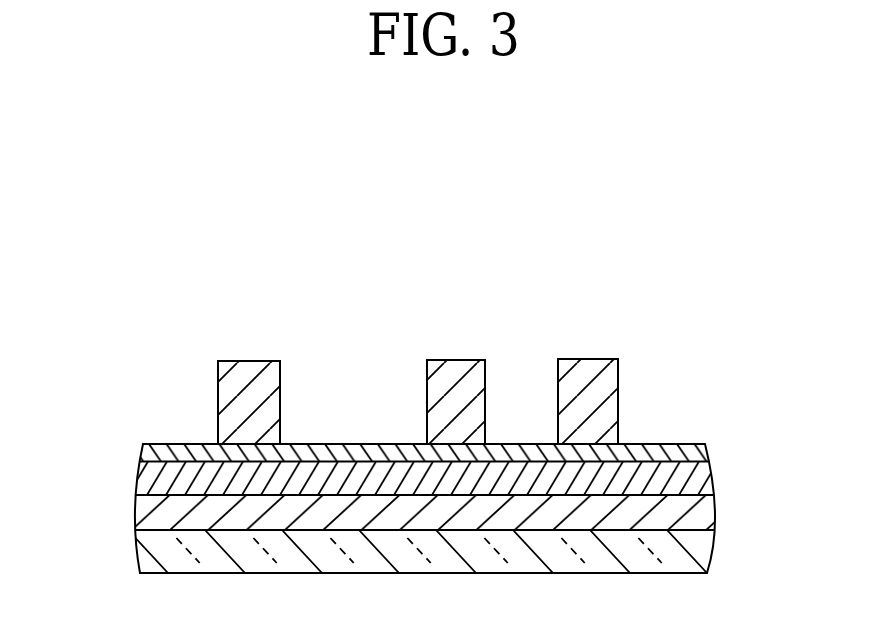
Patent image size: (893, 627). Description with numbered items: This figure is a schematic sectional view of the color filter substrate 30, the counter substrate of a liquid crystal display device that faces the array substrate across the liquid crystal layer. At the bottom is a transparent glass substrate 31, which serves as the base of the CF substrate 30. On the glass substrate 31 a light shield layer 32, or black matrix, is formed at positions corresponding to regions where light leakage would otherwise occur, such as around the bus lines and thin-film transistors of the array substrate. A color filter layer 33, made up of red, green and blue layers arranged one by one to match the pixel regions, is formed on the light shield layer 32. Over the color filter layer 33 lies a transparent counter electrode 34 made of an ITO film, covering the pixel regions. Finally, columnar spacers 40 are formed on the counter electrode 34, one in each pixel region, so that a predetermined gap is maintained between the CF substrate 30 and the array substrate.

The color filter substrate 30 is at (85, 264).
The glass substrate 31 is at (710, 545).
The light shield layer 32 is at (715, 508).
The color filter layer 33 is at (712, 473).
The counter electrode 34 is at (706, 450).
The columnar spacers 40 is at (280, 380).